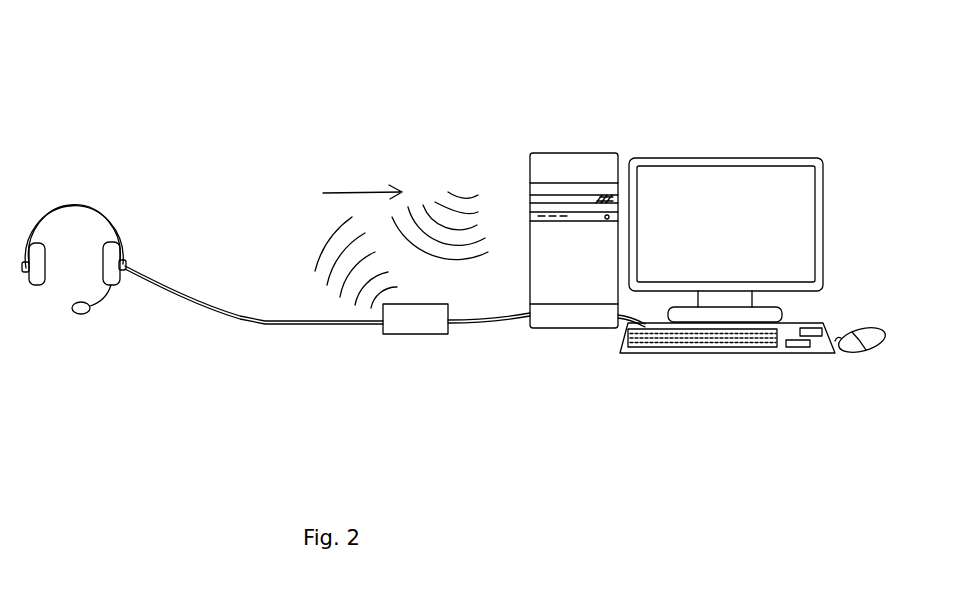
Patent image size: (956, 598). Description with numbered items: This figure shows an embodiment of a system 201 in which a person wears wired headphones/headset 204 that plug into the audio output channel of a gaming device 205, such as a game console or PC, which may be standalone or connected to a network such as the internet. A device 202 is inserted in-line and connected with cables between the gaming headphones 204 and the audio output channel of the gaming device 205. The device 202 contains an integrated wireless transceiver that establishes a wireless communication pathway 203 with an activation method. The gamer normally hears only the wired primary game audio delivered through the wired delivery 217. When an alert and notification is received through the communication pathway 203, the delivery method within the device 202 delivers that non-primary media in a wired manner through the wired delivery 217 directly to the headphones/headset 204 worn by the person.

The system 201 is at (273, 115).
The device 202 is at (415, 349).
The communication pathway 203 is at (302, 240).
The headphones/headset 204 is at (78, 166).
The gaming device 205 is at (615, 109).
The wired delivery 217 is at (202, 323).